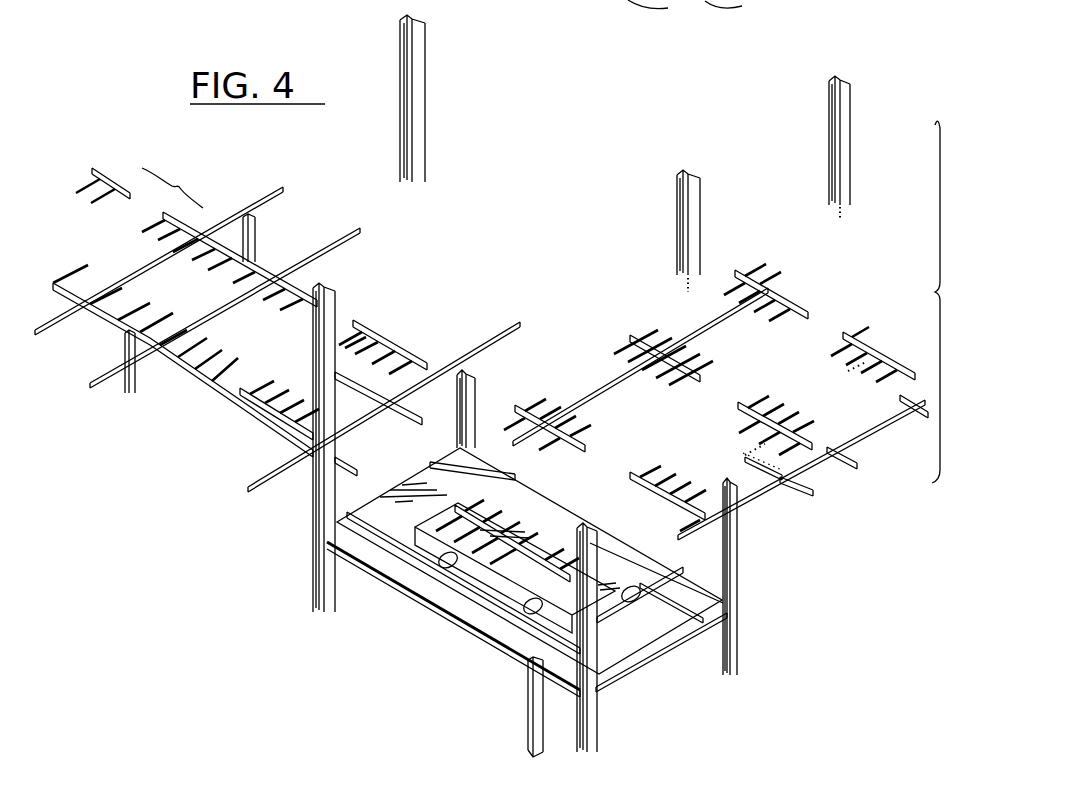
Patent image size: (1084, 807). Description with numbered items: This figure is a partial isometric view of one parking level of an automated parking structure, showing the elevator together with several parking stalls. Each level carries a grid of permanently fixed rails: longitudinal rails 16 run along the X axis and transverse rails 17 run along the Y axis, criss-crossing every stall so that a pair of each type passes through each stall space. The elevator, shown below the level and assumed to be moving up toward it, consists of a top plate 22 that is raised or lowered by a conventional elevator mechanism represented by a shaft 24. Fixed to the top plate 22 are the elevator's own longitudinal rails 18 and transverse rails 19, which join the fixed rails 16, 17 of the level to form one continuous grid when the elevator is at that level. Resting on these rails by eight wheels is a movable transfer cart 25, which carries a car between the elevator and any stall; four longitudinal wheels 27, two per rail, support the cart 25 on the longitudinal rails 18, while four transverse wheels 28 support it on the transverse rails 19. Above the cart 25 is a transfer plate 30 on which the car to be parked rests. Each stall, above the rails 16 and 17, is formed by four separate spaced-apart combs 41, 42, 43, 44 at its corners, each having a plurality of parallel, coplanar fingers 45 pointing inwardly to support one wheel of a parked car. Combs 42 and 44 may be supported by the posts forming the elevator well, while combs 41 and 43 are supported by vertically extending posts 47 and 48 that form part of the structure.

The longitudinal rails 16 is at (355, 462).
The transverse rails 17 is at (53, 323).
The longitudinal rails of the elevator 18 is at (480, 608).
The transverse rails of the elevator 19 is at (645, 603).
The top plate 22 is at (432, 612).
The shaft 24 is at (530, 730).
The transfer cart 25 is at (527, 627).
The longitudinal wheels 27 is at (438, 573).
The transverse wheels 28 is at (633, 607).
The transfer plate 30 is at (530, 537).
The comb 41 is at (185, 375).
The comb 42 is at (257, 413).
The comb 43 is at (305, 289).
The comb 44 is at (397, 341).
The fingers 45 is at (168, 328).
The vertical post 47 is at (127, 392).
The vertical post 48 is at (257, 217).